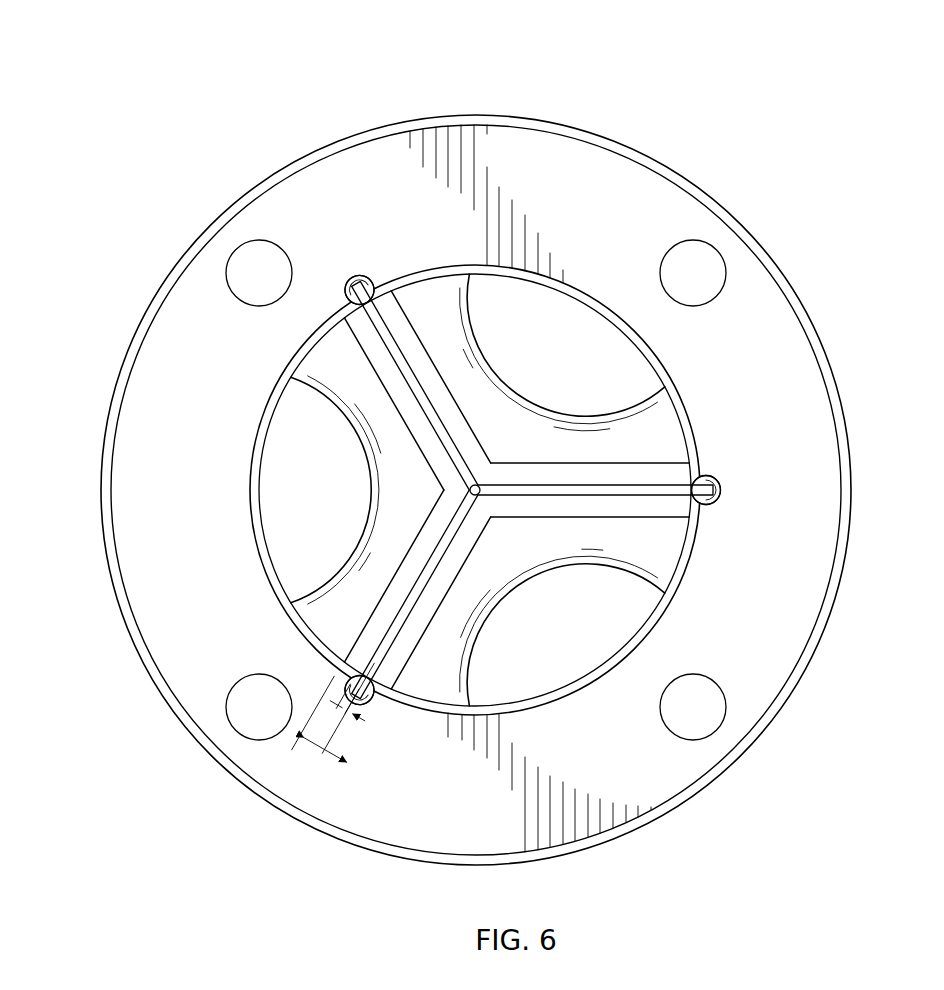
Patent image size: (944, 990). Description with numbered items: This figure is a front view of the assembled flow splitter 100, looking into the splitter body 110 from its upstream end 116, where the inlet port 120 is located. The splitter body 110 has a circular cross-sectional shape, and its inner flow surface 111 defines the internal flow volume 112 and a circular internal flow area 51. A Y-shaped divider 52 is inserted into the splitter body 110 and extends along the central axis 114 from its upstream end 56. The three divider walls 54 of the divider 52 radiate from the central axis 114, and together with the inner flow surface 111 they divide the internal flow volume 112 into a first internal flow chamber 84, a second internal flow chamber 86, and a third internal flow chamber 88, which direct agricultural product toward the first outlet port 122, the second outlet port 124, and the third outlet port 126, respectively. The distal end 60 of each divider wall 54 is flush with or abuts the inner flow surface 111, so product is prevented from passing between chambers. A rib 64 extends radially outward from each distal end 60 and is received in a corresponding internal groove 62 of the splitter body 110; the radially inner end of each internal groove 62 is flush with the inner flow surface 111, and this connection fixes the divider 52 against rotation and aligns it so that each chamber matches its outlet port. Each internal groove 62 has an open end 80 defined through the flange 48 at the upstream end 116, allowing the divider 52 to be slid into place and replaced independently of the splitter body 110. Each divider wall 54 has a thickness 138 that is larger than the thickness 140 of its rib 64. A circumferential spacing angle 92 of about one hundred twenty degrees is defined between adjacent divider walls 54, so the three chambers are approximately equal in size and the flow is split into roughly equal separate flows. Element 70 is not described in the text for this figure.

The flange 48 is at (374, 162).
The circular internal flow area 51 is at (286, 555).
The divider 52 is at (582, 547).
The divider wall 54 is at (408, 415).
The upstream end 56 is at (653, 414).
The distal end 60 is at (346, 298).
The internal groove 62 is at (354, 283).
The rib 64 is at (375, 284).
The plate 70 is at (144, 518).
The open end 80 is at (324, 251).
The first internal flow chamber 84 is at (233, 401).
The second internal flow chamber 86 is at (578, 261).
The third internal flow chamber 88 is at (703, 592).
The circumferential spacing angle 92 is at (474, 425).
The flow splitter 100 is at (161, 90).
The splitter body 110 is at (723, 114).
The inner flow surface 111 is at (557, 692).
The internal flow volume 112 is at (446, 756).
The central axis 114 is at (469, 490).
The upstream end 116 is at (89, 217).
The inlet port 120 is at (146, 443).
The first outlet port 122 is at (289, 457).
The second outlet port 124 is at (535, 349).
The third outlet port 126 is at (555, 617).
The divider wall thickness 138 is at (323, 760).
The rib thickness 140 is at (363, 738).